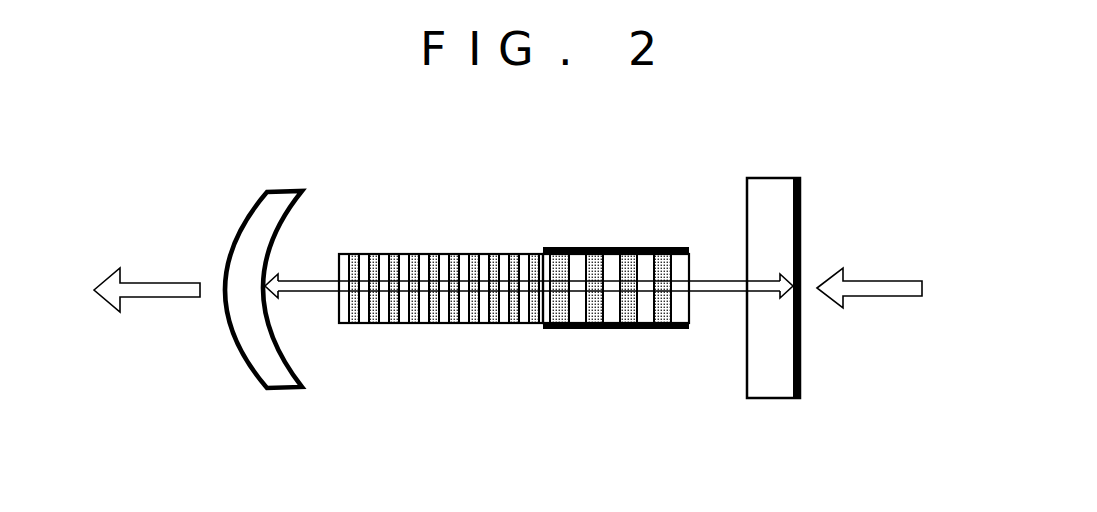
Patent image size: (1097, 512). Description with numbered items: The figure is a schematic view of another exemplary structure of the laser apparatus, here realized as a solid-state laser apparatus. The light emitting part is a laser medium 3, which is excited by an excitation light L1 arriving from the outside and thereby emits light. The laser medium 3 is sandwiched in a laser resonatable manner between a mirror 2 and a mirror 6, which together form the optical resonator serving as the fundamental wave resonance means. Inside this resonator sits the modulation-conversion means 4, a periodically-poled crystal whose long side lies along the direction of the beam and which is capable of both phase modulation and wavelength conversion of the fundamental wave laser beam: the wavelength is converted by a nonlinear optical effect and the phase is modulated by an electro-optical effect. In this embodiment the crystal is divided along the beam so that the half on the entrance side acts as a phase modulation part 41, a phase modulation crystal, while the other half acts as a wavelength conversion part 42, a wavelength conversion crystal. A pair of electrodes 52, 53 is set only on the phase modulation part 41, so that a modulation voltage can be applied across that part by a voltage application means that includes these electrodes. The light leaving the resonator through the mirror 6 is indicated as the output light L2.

The mirror 2 is at (835, 288).
The laser medium 3 is at (800, 269).
The modulation-conversion means 4 is at (514, 371).
The mirror 6 is at (242, 265).
The phase modulation part 41 is at (616, 337).
The wavelength conversion part 42 is at (441, 337).
The electrode 52 is at (616, 209).
The electrode 53 is at (631, 360).
The excitation light L1 is at (871, 321).
The converted light output beam L2 is at (147, 322).